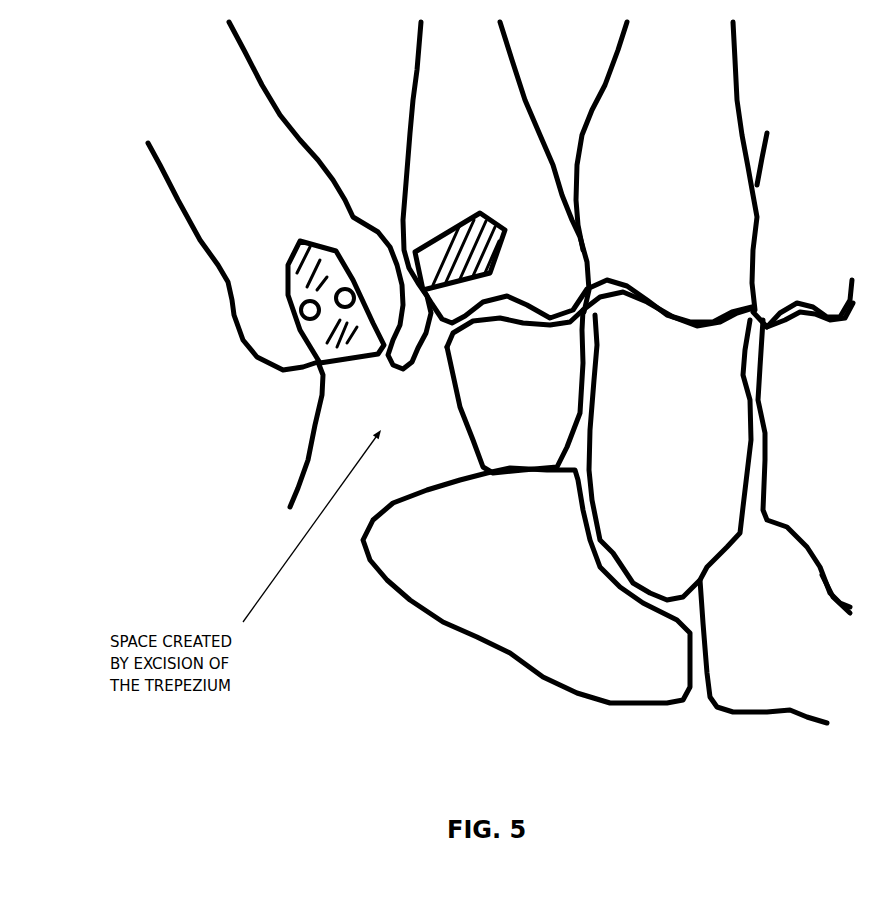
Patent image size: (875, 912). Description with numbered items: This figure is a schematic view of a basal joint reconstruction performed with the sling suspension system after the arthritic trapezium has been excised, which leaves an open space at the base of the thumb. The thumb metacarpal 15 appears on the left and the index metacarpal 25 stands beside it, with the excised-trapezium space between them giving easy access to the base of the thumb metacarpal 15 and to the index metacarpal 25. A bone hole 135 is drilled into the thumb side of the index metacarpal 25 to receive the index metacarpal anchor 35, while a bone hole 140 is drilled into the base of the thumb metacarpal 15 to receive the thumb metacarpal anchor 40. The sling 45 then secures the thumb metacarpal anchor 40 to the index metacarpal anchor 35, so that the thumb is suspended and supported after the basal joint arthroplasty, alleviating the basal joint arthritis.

The thumb metacarpal 15 is at (206, 180).
The index metacarpal 25 is at (448, 134).
The index metacarpal anchor 35 is at (500, 245).
The thumb metacarpal anchor 40 is at (295, 239).
The sling 45 is at (294, 459).
The bone hole 135 is at (460, 266).
The bone hole 140 is at (288, 278).